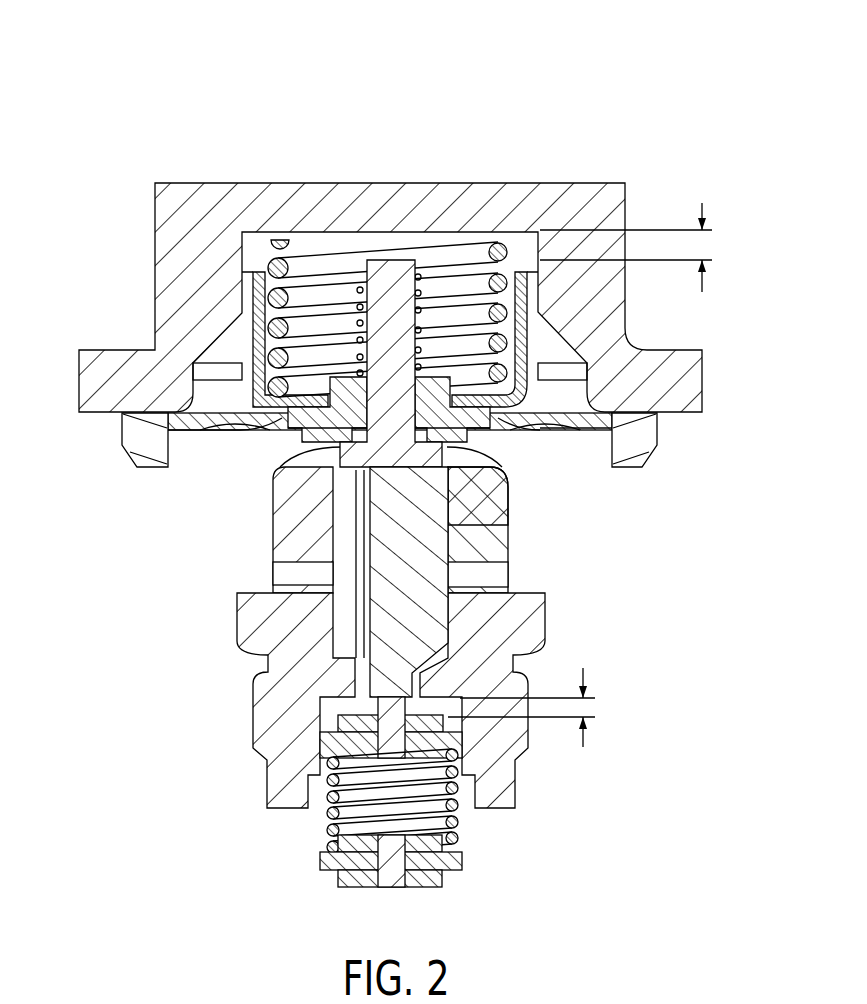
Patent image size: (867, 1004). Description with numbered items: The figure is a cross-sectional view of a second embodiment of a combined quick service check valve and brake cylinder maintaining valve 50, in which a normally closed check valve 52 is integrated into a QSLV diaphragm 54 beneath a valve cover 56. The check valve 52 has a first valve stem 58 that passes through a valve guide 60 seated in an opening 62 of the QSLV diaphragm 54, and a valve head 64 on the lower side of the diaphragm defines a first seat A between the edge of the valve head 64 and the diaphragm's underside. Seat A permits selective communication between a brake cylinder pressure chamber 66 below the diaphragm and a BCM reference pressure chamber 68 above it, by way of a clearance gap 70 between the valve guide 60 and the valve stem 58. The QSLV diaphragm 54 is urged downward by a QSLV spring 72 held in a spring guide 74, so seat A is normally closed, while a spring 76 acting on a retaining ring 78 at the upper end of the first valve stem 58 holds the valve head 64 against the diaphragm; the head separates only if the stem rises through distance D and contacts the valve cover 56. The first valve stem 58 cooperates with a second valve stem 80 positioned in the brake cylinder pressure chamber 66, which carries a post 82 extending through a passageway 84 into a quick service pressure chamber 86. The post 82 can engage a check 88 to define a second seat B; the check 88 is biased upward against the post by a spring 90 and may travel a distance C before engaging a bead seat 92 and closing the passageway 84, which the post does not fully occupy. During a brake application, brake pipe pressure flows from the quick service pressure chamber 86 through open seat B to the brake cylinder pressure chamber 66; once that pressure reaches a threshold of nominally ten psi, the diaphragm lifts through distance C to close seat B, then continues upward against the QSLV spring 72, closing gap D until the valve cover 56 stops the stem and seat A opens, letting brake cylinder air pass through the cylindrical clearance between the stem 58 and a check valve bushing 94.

The combined quick service check valve and brake cylinder maintaining valve 50 is at (368, 88).
The check valve 52 is at (500, 465).
The QSLV diaphragm 54 is at (122, 425).
The valve cover 56 is at (155, 245).
The first valve stem 58 is at (497, 497).
The valve guide 60 is at (257, 350).
The opening 62 is at (498, 522).
The valve head 64 is at (274, 480).
The brake cylinder pressure chamber 66 is at (336, 525).
The BCM reference pressure chamber 68 is at (252, 255).
The clearance gap 70 is at (355, 362).
The QSLV spring 72 is at (498, 245).
The spring guide 74 is at (253, 300).
The spring 76 is at (427, 300).
The retaining ring 78 is at (367, 278).
The second valve stem 80 is at (433, 607).
The post 82 is at (446, 735).
The passageway 84 is at (358, 656).
The quick service pressure chamber 86 is at (326, 701).
The check 88 is at (325, 713).
The spring 90 is at (458, 822).
The bead seat 92 is at (420, 700).
The check valve bushing 94 is at (265, 425).
The first seat A is at (290, 452).
The second seat B is at (360, 690).
The distance C is at (586, 672).
The distance D is at (703, 205).